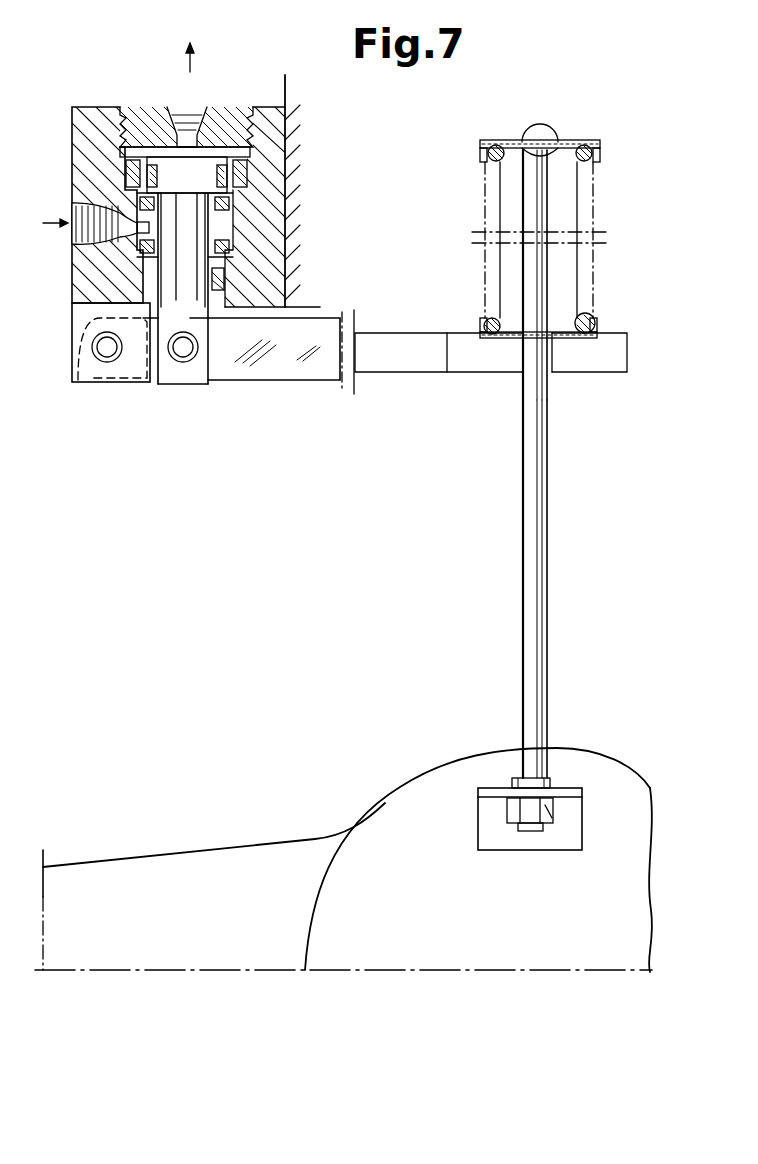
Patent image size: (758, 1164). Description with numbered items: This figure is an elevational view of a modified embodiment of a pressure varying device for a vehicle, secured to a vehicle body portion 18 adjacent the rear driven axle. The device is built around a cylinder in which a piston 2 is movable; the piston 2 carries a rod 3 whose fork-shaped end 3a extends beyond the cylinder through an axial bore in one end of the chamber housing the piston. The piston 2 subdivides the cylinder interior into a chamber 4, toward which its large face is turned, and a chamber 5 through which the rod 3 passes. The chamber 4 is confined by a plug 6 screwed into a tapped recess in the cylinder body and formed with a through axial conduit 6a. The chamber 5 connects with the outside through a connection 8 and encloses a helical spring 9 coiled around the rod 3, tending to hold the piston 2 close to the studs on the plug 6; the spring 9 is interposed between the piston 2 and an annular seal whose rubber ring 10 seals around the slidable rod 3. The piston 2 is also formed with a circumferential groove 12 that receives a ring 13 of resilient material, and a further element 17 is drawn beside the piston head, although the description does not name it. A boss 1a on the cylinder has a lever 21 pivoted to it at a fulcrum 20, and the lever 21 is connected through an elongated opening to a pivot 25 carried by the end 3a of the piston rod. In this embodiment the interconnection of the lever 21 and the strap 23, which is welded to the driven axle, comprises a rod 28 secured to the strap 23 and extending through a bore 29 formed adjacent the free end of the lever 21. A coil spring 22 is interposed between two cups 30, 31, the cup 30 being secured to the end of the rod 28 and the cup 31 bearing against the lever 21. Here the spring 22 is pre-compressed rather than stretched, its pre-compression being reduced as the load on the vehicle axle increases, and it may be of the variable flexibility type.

The boss 1a is at (77, 382).
The piston 2 is at (167, 162).
The rod 3 is at (172, 297).
The end of the rod 3a is at (168, 328).
The chamber 4 is at (242, 155).
The chamber 5 is at (229, 226).
The plug 6 is at (228, 123).
The through axial conduit 6a is at (187, 120).
The connection 8 is at (72, 240).
The helical spring 9 is at (233, 248).
The rubber ring 10 is at (218, 290).
The circumferential groove 12 is at (175, 207).
The ring 13 is at (126, 173).
The sealing ring 17 is at (247, 182).
The vehicle body portion 18 is at (287, 110).
The fulcrum 20 is at (108, 365).
The lever 21 is at (393, 360).
The coil spring 22 is at (585, 227).
The strap 23 is at (208, 383).
The pivot 25 is at (183, 374).
The rod 28 is at (532, 510).
The bore 29 is at (553, 373).
The cup 30 is at (600, 146).
The cup 31 is at (597, 331).